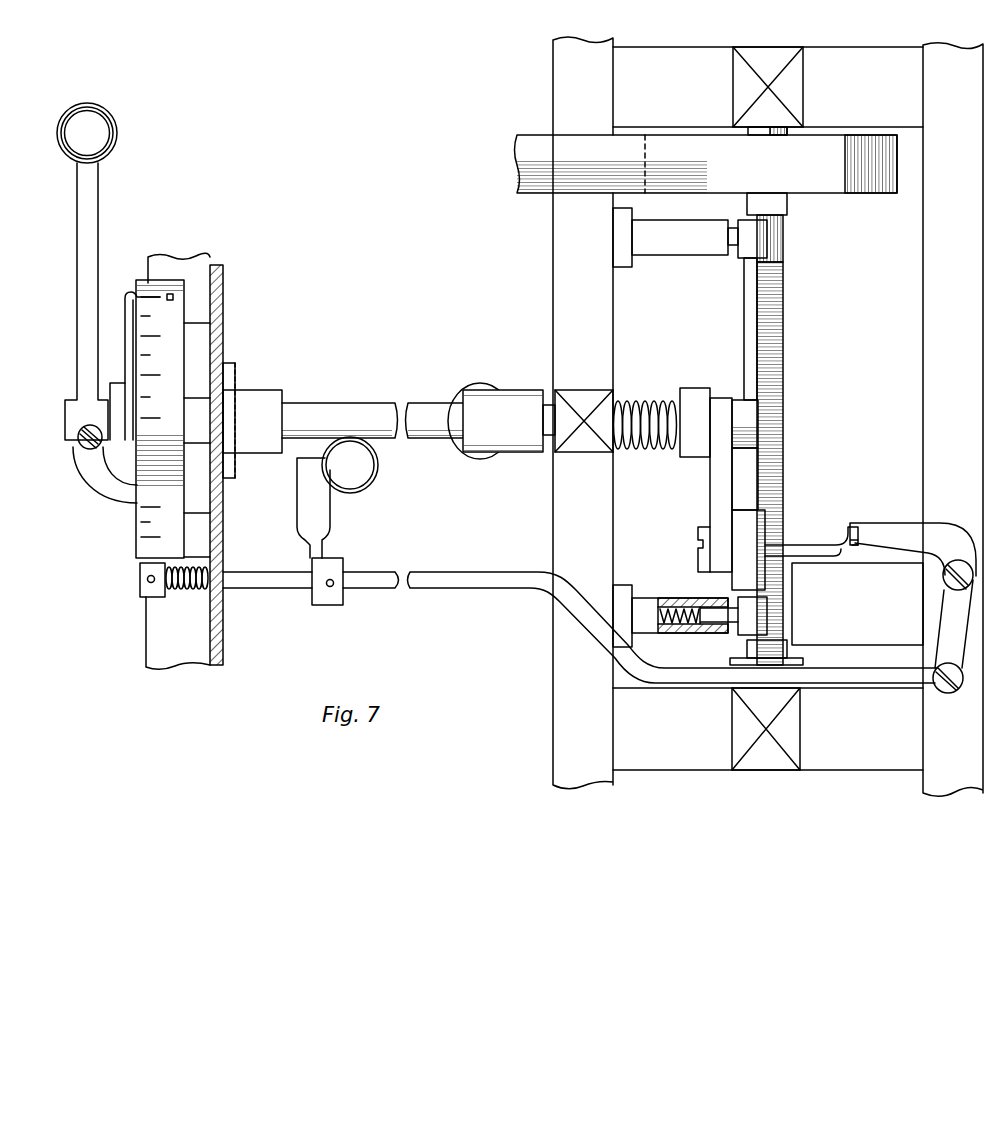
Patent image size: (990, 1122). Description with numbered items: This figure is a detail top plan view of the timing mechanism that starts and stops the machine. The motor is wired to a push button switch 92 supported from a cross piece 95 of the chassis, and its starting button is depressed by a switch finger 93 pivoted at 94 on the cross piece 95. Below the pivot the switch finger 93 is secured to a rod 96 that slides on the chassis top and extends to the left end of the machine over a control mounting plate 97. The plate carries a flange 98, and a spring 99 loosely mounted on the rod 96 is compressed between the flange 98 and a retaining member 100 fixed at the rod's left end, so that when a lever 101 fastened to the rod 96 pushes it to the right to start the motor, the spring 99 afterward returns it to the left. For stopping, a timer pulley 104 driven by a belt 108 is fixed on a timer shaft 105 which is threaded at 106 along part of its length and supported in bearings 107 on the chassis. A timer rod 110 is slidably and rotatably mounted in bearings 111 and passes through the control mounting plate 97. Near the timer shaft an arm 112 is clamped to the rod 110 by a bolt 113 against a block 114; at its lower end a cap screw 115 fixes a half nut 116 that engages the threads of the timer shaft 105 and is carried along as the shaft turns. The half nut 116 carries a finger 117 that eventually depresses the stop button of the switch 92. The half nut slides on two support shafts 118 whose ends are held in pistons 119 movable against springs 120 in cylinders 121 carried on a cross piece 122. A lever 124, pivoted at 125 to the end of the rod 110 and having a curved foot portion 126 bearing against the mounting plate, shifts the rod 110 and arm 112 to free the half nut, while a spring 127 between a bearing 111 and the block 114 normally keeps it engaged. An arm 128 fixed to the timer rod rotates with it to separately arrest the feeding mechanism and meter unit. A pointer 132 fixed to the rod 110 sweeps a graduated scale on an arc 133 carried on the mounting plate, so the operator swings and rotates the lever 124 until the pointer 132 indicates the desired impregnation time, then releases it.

The switch 92 is at (882, 636).
The switch finger 93 is at (880, 530).
The pivot 94 is at (950, 578).
The cross piece 95 is at (947, 765).
The rod 96 is at (470, 585).
The control mounting plate 97 is at (196, 652).
The flange 98 is at (224, 632).
The spring 99 is at (190, 592).
The retaining member 100 is at (138, 590).
The lever 101 is at (372, 465).
The timer pulley 104 is at (852, 190).
The timer shaft 105 is at (780, 243).
The threads 106 is at (775, 298).
The bearings 107 is at (795, 90).
The belt 108 is at (515, 162).
The timer rod 110 is at (343, 406).
The bearings 111 is at (262, 396).
The timer arm 112 is at (720, 478).
The bolt 113 is at (750, 412).
The block 114 is at (688, 442).
The cap screw 115 is at (700, 530).
The half nut 116 is at (750, 537).
The finger 117 is at (828, 545).
The support shafts 118 is at (748, 308).
The piston 119 is at (748, 245).
The spring 120 is at (684, 606).
The cylinder 121 is at (724, 232).
The cross piece 122 is at (560, 512).
The lever 124 is at (95, 133).
The pivot 125 is at (80, 446).
The curved foot portion 126 is at (92, 480).
The spring 127 is at (668, 398).
The arm 128 is at (470, 395).
The pointer 132 is at (130, 290).
The arc 133 is at (140, 533).